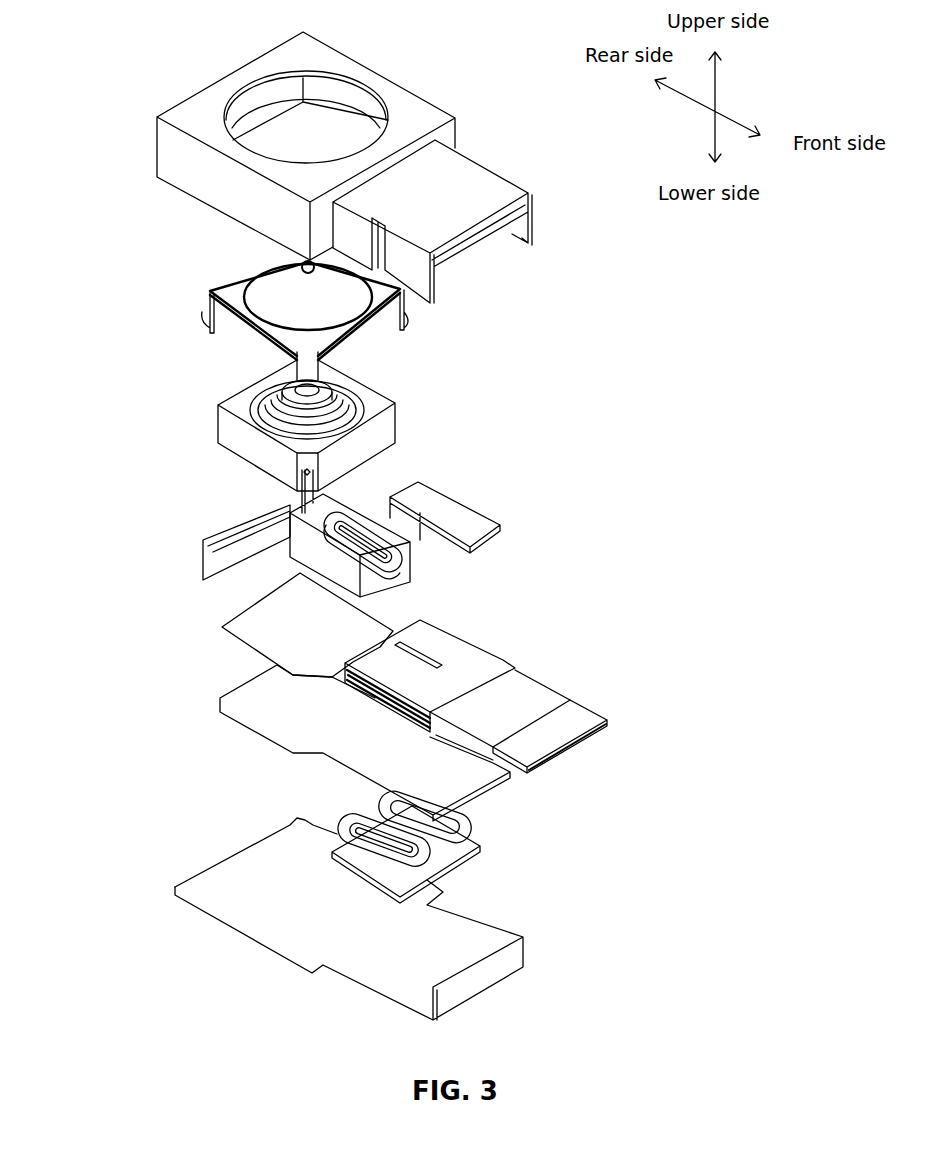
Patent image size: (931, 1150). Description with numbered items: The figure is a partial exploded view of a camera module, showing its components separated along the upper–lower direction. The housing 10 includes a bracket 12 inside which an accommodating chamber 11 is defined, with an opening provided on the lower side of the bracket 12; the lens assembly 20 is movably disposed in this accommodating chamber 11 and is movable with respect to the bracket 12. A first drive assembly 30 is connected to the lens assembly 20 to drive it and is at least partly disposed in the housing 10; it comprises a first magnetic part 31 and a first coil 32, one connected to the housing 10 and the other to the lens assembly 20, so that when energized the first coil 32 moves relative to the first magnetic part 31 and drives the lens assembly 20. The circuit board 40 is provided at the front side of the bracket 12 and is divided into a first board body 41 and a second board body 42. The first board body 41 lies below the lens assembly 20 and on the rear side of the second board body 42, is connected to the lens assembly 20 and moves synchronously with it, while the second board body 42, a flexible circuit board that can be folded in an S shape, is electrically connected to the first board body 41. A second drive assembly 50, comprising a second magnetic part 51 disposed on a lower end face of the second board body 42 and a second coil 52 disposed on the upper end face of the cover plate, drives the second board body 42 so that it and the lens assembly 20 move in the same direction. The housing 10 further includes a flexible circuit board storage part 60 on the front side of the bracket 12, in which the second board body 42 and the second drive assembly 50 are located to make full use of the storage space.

The housing 10 is at (242, 142).
The accommodating chamber 11 is at (270, 108).
The bracket 12 is at (230, 294).
The lens assembly 20 is at (240, 437).
The first drive assembly 30 is at (401, 473).
The first magnetic part 31 is at (378, 512).
The first coil 32 is at (422, 540).
The circuit board 40 is at (427, 660).
The first board body 41 is at (337, 622).
The second board body 42 is at (513, 700).
The second drive assembly 50 is at (521, 856).
The second magnetic part 51 is at (457, 875).
The second coil 52 is at (467, 833).
The flexible circuit board storage part 60 is at (468, 190).